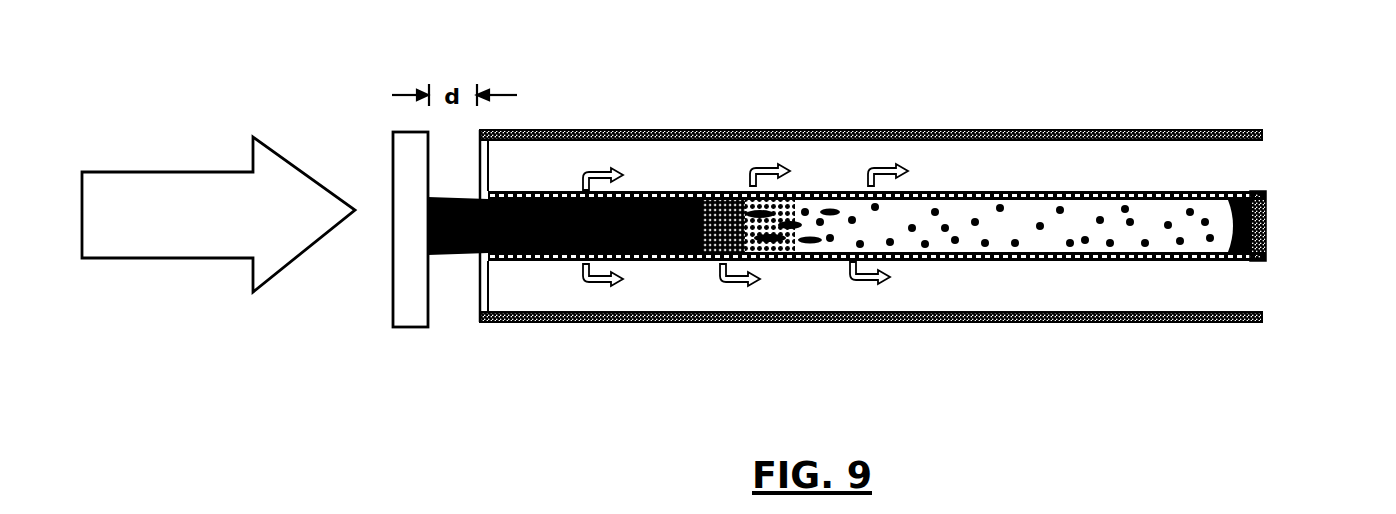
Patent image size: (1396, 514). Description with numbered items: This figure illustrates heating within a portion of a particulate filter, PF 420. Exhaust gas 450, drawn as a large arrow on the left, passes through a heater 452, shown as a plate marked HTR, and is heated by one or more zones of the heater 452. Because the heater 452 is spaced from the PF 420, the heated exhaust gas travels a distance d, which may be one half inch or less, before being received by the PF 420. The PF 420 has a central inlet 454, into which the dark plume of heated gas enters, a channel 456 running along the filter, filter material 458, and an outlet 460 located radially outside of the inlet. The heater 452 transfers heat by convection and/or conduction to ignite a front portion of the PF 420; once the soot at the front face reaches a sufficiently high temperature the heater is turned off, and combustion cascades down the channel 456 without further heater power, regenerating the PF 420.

The particulate filter 420 is at (772, 132).
The exhaust gas 450 is at (195, 258).
The heater 452 is at (412, 327).
The central inlet 454 is at (468, 258).
The channel 456 is at (965, 202).
The filter material 458 is at (922, 192).
The outlet 460 is at (1266, 171).